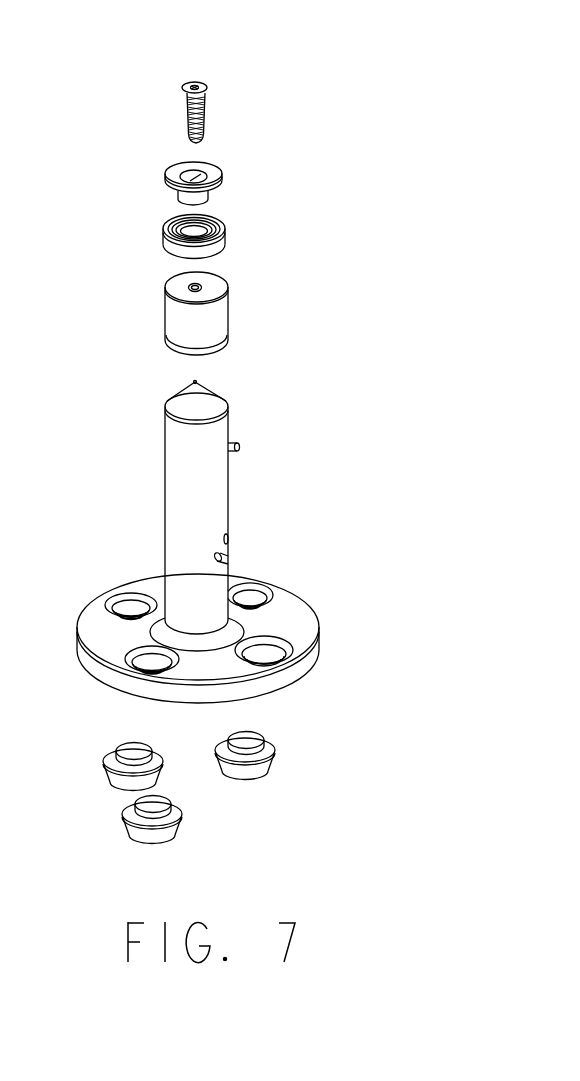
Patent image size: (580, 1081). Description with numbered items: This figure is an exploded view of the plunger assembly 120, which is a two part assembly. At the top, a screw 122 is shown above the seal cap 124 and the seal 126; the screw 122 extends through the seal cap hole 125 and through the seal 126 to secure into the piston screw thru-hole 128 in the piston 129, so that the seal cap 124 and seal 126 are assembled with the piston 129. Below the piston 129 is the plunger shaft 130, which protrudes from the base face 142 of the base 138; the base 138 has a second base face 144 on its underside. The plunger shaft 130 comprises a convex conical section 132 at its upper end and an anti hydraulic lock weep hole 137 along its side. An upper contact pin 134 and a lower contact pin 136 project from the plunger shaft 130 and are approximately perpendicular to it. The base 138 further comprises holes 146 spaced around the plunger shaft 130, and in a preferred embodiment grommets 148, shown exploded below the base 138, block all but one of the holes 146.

The plunger assembly 120 is at (312, 125).
The screw 122 is at (183, 83).
The seal cap 124 is at (221, 183).
The seal cap hole 125 is at (209, 157).
The seal 126 is at (224, 242).
The piston screw thru-hole 128 is at (202, 287).
The piston 129 is at (165, 317).
The plunger shaft 130 is at (165, 525).
The convex conical section 132 is at (180, 388).
The upper contact pin 134 is at (241, 444).
The lower contact pin 136 is at (232, 558).
The anti hydraulic lock weep hole 137 is at (229, 538).
The base 138 is at (234, 691).
The base face 142 is at (285, 623).
The base face 144 is at (288, 688).
The holes 146 is at (299, 655).
The grommets 148 is at (107, 758).